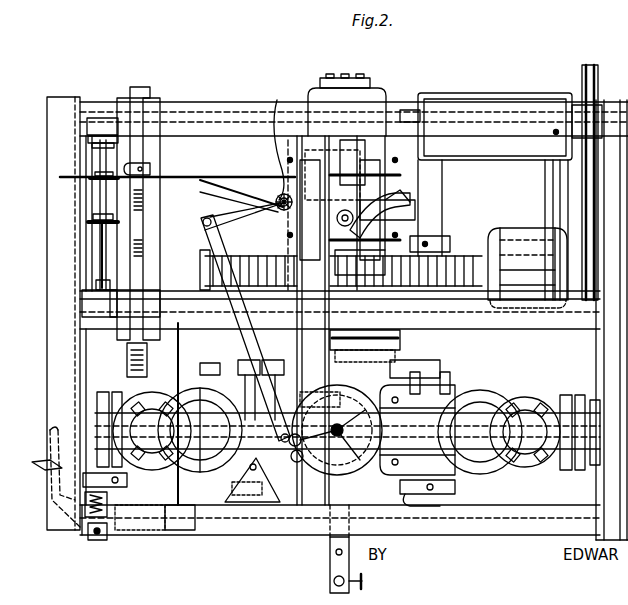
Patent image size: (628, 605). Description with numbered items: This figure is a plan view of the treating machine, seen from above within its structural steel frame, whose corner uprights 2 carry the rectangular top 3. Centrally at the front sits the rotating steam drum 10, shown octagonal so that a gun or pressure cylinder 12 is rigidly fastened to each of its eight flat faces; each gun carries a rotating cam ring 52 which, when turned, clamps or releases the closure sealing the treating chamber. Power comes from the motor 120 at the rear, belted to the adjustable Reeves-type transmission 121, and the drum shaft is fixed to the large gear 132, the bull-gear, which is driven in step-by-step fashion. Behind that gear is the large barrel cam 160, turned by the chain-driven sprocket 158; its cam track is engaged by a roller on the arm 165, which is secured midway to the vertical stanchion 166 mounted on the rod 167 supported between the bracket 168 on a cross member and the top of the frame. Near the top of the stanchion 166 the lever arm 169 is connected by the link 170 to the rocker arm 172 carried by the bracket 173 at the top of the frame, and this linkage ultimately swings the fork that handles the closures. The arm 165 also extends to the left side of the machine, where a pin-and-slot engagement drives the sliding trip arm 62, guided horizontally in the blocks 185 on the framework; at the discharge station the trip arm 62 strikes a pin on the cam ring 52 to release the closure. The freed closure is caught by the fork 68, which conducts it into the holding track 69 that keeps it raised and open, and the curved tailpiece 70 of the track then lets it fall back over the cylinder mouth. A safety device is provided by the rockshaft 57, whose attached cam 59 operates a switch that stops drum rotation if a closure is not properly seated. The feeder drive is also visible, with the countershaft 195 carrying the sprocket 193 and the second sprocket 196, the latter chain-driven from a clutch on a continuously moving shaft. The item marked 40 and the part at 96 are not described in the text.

The corner uprights 2 is at (97, 118).
The rectangular top 3 is at (219, 102).
The rotating steam drum 10 is at (430, 497).
The gun or pressure cylinder 12 is at (448, 410).
The hook 40 is at (40, 468).
The rotating cam ring 52 is at (493, 390).
The rockshaft 57 is at (180, 362).
The cam 59 is at (176, 530).
The sliding trip arm 62 is at (147, 356).
The fork 68 is at (50, 425).
The holding track 69 is at (128, 468).
The curved tailpiece 70 is at (196, 470).
The clamp block 96 is at (380, 337).
The motor 120 is at (518, 228).
The transmission 121 is at (534, 80).
The large gear 132 is at (448, 238).
The sprocket 158 is at (405, 185).
The barrel cam 160 is at (405, 205).
The arm 165 is at (238, 164).
The vertical pipe or stanchion 166 is at (277, 184).
The rod 167 is at (281, 210).
The bracket 168 is at (267, 142).
The lever arm 169 is at (237, 217).
The link 170 is at (205, 226).
The rocker arm 172 is at (241, 390).
The bracket 173 is at (248, 503).
The blocks 185 is at (157, 147).
The sprocket 193 is at (98, 220).
The countershaft 195 is at (100, 244).
The second sprocket 196 is at (100, 178).